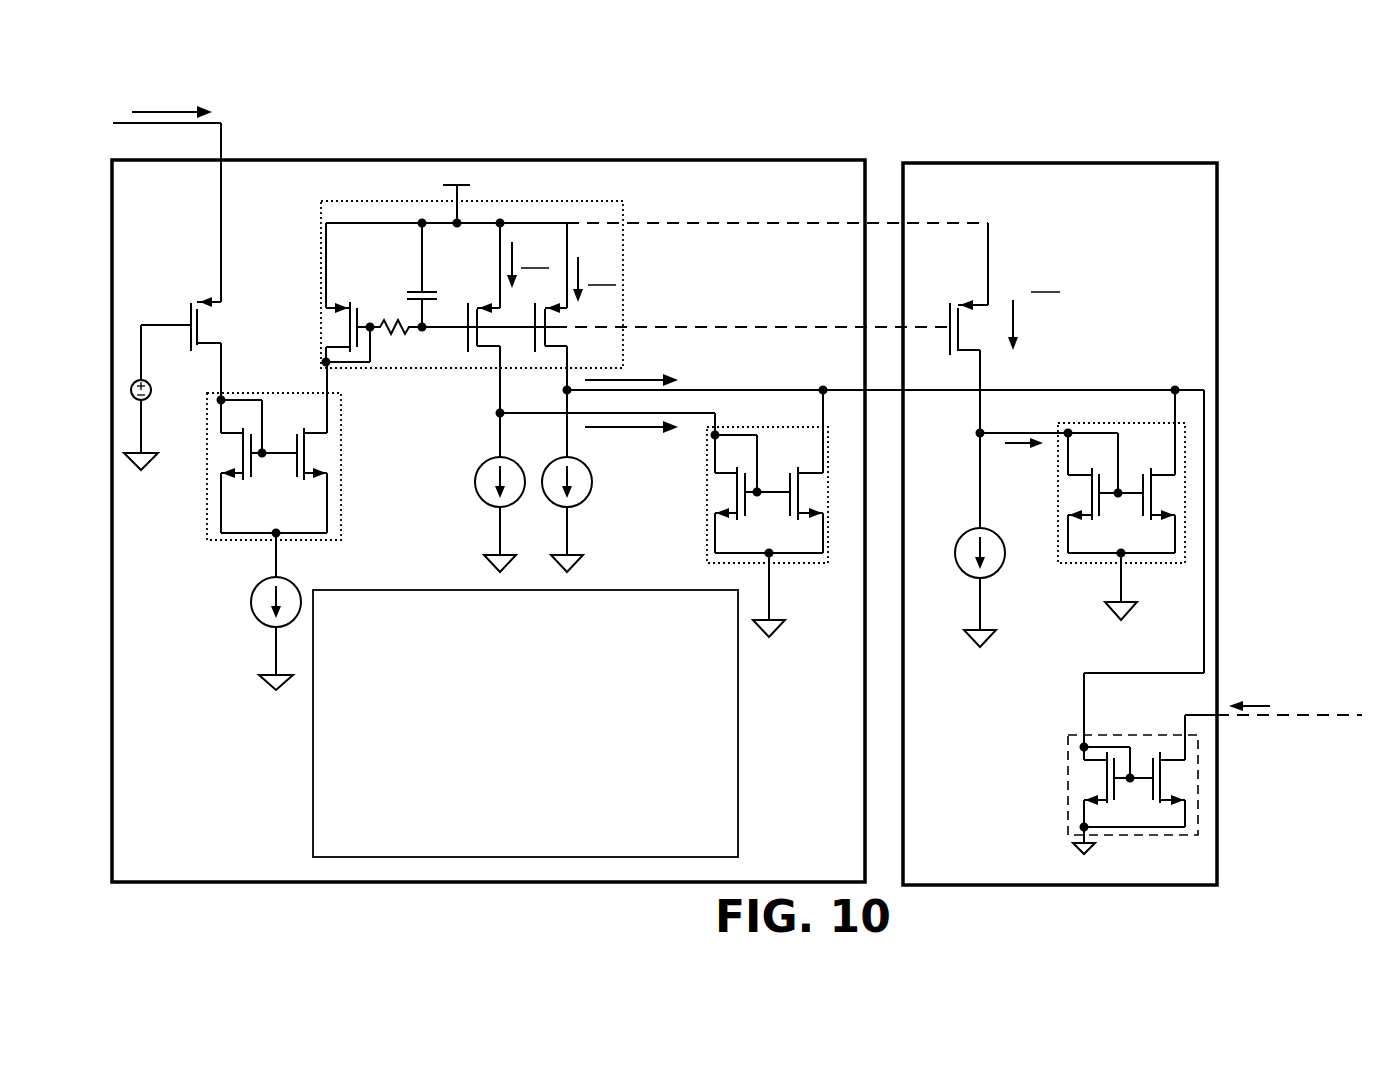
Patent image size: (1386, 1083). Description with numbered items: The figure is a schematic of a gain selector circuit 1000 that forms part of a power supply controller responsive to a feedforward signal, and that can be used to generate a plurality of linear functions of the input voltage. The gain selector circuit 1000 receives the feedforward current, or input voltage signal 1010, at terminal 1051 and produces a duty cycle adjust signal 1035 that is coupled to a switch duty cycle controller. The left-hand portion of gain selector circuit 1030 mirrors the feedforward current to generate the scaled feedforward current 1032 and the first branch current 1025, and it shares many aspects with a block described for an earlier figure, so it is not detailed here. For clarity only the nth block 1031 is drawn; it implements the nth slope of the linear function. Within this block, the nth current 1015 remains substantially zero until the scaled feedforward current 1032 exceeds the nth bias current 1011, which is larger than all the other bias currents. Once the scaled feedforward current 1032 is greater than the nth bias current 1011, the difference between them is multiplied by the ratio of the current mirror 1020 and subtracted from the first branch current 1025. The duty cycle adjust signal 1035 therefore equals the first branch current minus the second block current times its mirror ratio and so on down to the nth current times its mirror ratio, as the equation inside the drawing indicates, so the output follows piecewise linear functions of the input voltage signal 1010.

The gain selector circuit 1000 is at (740, 69).
The input voltage signal 1010 is at (153, 92).
The terminal 1051 is at (226, 153).
The portion of gain selector circuit 1030 is at (840, 158).
The nth block 1031 is at (1083, 155).
The current I1 1025 is at (655, 356).
The current I_FF/m1 1032 is at (1073, 285).
The current I_Bn 1011 is at (944, 504).
The current I_n 1015 is at (1014, 458).
The current mirror 1020 is at (1091, 572).
The duty cycle adjust signal 1035 is at (1262, 672).